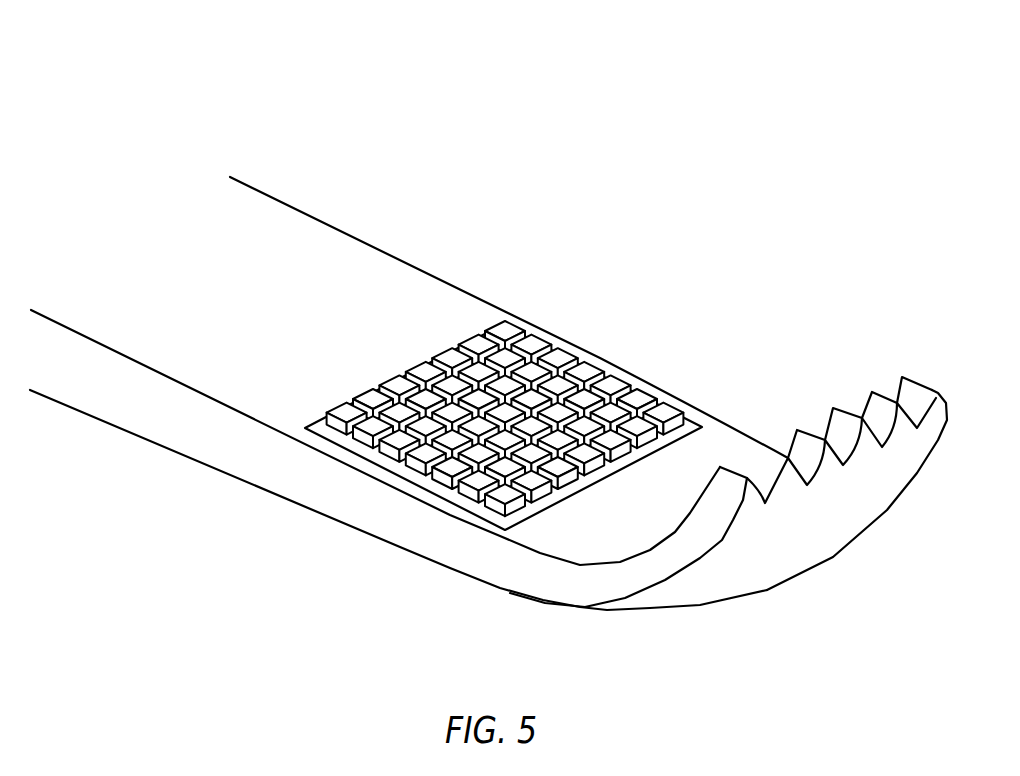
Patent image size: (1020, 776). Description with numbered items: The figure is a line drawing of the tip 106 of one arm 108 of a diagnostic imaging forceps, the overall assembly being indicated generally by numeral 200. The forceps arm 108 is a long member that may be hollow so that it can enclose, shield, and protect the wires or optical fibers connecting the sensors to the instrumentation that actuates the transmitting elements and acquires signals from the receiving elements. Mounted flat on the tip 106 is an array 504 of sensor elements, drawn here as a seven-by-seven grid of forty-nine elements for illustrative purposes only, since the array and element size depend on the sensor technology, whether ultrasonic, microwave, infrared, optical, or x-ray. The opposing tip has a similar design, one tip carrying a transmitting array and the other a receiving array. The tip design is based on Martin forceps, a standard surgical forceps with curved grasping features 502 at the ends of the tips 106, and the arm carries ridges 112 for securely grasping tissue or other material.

The band assembly 200 is at (762, 87).
The forceps arm 108 is at (247, 207).
The tip 106 is at (833, 408).
The ridges 112 is at (843, 518).
The curved grasping features 502 is at (592, 583).
The array of sensor elements 504 is at (583, 372).